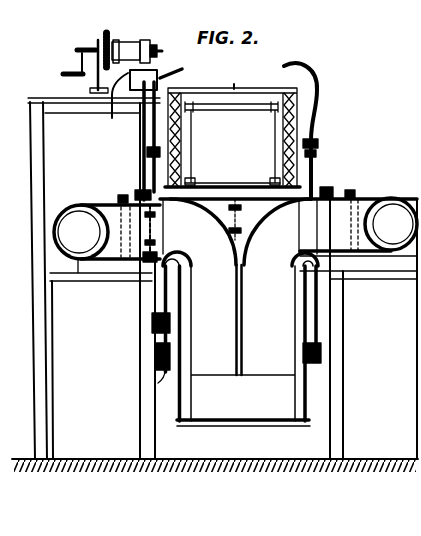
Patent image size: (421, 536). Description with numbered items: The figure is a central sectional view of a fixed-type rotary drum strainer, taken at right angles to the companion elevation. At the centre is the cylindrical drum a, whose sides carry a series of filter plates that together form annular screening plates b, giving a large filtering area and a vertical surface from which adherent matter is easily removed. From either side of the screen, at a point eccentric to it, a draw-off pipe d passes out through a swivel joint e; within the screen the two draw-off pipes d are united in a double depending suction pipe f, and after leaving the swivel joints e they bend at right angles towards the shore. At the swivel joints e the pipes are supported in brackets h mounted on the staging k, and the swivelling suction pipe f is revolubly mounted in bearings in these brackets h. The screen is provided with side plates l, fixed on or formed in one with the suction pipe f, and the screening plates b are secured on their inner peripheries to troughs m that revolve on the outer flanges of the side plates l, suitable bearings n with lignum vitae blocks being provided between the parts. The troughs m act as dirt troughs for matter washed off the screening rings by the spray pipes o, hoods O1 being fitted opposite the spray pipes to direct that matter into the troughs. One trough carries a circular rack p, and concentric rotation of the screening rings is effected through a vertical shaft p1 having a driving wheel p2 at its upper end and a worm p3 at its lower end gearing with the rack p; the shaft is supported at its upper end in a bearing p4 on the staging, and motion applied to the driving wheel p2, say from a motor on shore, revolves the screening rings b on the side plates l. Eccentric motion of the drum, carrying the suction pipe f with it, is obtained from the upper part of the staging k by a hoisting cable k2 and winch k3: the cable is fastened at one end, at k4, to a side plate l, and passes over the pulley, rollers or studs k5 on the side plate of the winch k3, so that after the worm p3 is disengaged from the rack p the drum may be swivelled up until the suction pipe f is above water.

The cylindrical drum a is at (233, 77).
The annular screening plates b is at (180, 409).
The draw-off pipe d is at (82, 206).
The swivel joint e is at (148, 272).
The depending suction pipe f is at (222, 324).
The brackets h is at (347, 282).
The staging k is at (78, 275).
The hoisting cable k2 is at (143, 40).
The winch k3 is at (98, 38).
The cable fastening k4 is at (153, 323).
The pulley, rollers or studs k5 is at (157, 353).
The side plates l is at (157, 331).
The troughs m is at (319, 142).
The bearings n is at (321, 355).
The spray pipes o is at (266, 134).
The hoods O1 is at (297, 63).
The circular rack p is at (143, 151).
The vertical shaft p1 is at (146, 168).
The driving wheel p2 is at (158, 68).
The worm or worm wheel p3 is at (140, 276).
The bearing p4 is at (113, 106).